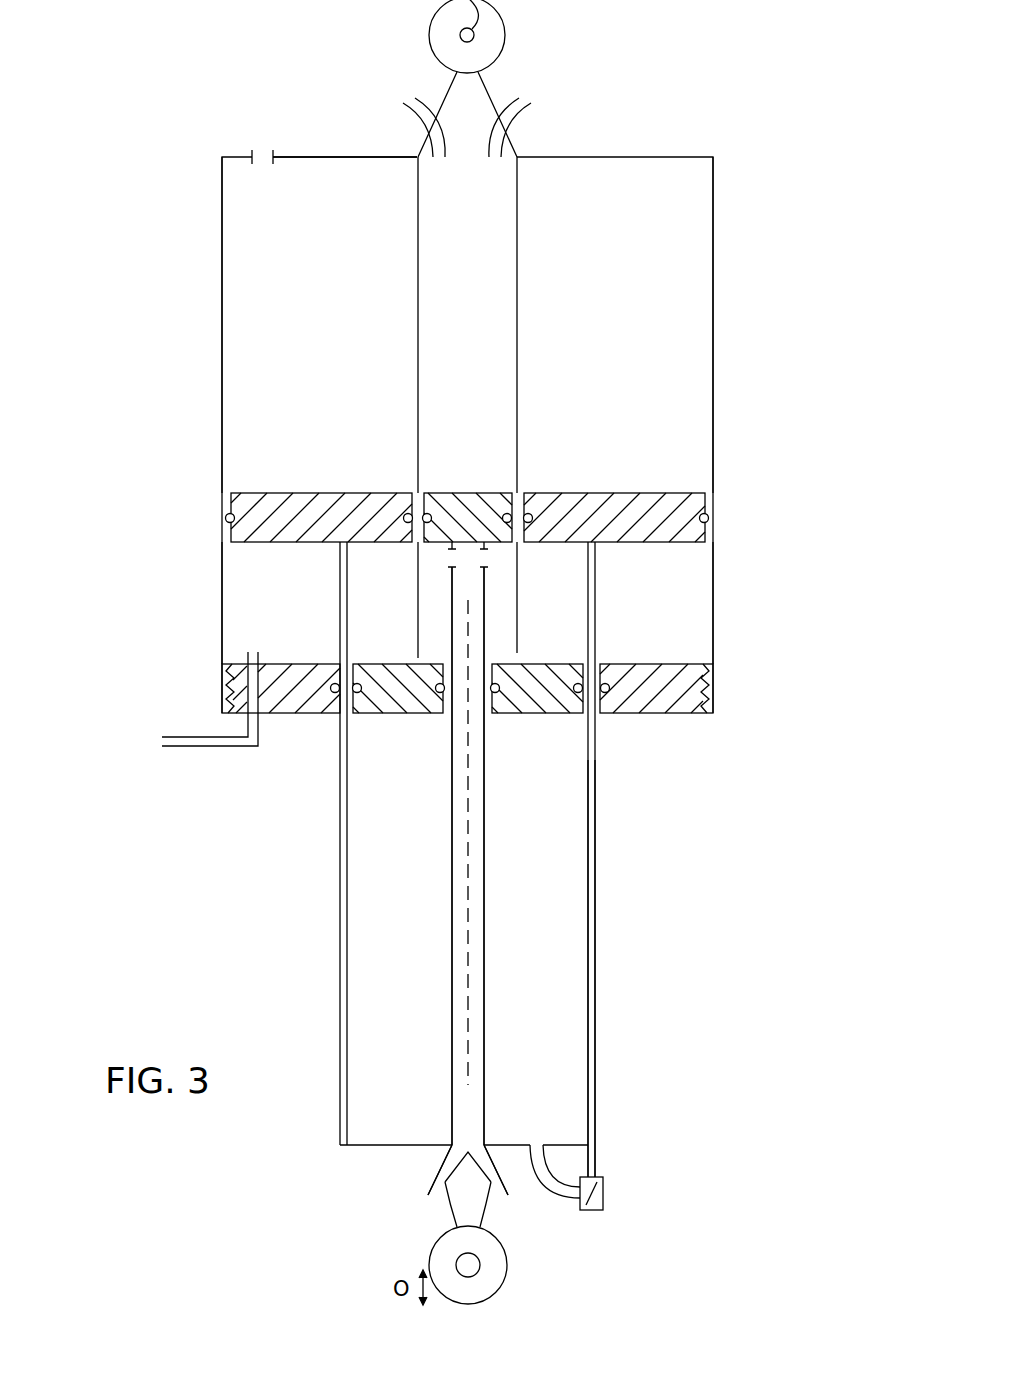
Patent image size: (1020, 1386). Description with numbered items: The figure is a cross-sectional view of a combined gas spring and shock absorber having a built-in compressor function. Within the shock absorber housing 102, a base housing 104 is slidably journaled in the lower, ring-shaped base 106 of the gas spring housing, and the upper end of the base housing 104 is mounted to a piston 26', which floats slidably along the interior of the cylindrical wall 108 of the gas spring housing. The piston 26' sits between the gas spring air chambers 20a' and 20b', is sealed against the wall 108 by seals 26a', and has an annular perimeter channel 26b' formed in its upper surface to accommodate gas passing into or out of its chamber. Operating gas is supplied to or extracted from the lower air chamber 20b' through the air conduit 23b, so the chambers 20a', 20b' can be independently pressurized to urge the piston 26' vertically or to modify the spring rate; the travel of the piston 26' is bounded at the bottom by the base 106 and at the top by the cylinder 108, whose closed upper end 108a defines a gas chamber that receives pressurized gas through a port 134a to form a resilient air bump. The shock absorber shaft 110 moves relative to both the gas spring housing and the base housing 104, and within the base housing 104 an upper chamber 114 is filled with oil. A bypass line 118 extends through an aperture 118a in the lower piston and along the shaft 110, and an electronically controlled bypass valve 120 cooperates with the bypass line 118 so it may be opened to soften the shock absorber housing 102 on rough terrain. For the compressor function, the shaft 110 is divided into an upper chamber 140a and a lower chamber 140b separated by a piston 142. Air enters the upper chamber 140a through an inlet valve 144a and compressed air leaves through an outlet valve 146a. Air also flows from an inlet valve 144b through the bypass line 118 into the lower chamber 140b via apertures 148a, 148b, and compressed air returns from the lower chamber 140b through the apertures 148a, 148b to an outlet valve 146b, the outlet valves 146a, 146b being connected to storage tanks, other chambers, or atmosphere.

The cylindrical wall 108 is at (714, 372).
The closed upper end 108a is at (311, 155).
The port 134a is at (262, 140).
The shock absorber shaft 110 is at (418, 168).
The inlet valve 144a is at (422, 97).
The outlet valve 146a is at (528, 112).
The upper chamber 140a is at (422, 292).
The lower chamber 140b is at (424, 648).
The gas spring air chamber 20a' is at (446, 325).
The gas spring air chamber 20b' is at (432, 603).
The piston 26' is at (463, 528).
The seals 26a' is at (463, 514).
The annular perimeter channel 26b' is at (473, 489).
The piston 142 is at (440, 500).
The aperture 148a is at (450, 549).
The aperture 148b is at (486, 552).
The ring-shaped base 106 is at (305, 713).
The air conduit 23b is at (187, 748).
The upper chamber 114 is at (562, 893).
The base housing 104 is at (597, 918).
The bypass line 118 is at (487, 837).
The aperture 118a is at (468, 1101).
The inlet valve 144b is at (428, 1177).
The outlet valve 146b is at (510, 1188).
The bypass valve 120 is at (603, 1206).
The shock absorber housing 102 is at (640, 971).